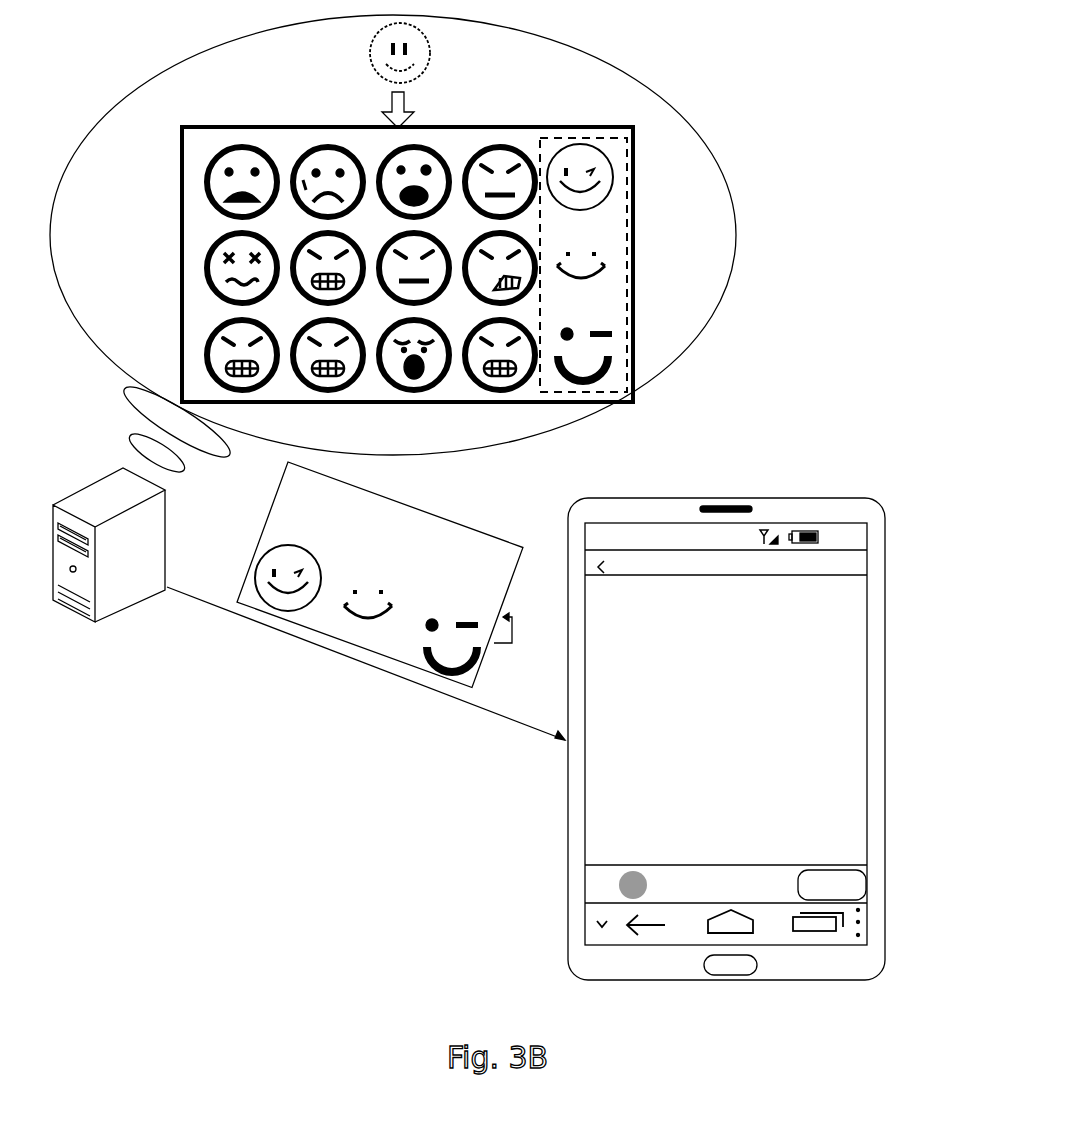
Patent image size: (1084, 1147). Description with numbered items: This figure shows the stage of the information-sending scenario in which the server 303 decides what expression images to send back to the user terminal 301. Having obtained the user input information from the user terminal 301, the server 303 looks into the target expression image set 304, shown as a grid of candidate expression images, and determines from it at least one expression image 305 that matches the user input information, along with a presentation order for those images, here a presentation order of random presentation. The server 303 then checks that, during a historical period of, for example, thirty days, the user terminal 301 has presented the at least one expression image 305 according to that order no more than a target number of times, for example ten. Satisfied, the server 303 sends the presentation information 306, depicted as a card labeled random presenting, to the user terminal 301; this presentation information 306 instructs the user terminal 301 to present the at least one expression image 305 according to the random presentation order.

The user terminal 301 is at (887, 641).
The server 303 is at (165, 522).
The target expression image set 304 is at (470, 131).
The at least one expression image 305 is at (630, 240).
The presentation information 306 is at (425, 510).